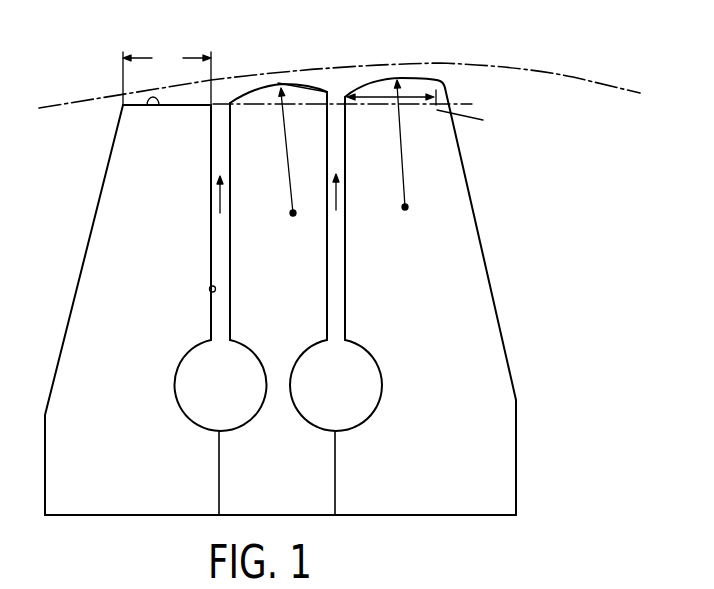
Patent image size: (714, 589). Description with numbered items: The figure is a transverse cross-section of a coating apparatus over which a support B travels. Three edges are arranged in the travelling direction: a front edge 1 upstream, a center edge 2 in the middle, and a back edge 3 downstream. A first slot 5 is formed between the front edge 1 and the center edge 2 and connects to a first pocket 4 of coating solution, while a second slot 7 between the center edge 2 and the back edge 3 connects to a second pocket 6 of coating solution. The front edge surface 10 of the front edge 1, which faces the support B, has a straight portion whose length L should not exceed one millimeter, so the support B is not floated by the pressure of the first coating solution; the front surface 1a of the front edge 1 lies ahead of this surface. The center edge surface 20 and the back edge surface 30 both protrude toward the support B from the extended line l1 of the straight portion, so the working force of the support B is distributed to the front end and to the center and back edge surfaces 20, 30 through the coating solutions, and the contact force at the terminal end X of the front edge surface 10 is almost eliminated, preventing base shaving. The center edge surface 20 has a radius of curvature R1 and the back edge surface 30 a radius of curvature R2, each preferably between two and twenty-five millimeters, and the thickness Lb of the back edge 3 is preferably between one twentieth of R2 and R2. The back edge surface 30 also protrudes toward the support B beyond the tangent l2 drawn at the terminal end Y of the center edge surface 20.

The front edge surface 10 is at (148, 106).
The front surface of front edge 1a is at (69, 323).
The front edge 1 is at (167, 208).
The center edge 2 is at (270, 203).
The back edge 3 is at (385, 190).
The first pocket 4 is at (177, 384).
The first slot 5 is at (209, 290).
The second pocket 6 is at (368, 385).
The second slot 7 is at (347, 290).
The center edge surface 20 is at (252, 92).
The back edge surface 30 is at (404, 77).
The support B is at (290, 64).
The length of straight portion L is at (167, 77).
The thickness of back edge Lb is at (440, 93).
The terminal end of front edge surface X is at (207, 106).
The terminal end of center edge surface Y is at (326, 92).
The extended line of straight portion l1 is at (270, 104).
The tangent at terminal end Y l2 is at (335, 98).
The radius of curvature of center edge surface R1 is at (299, 152).
The radius of curvature of back edge surface R2 is at (415, 145).